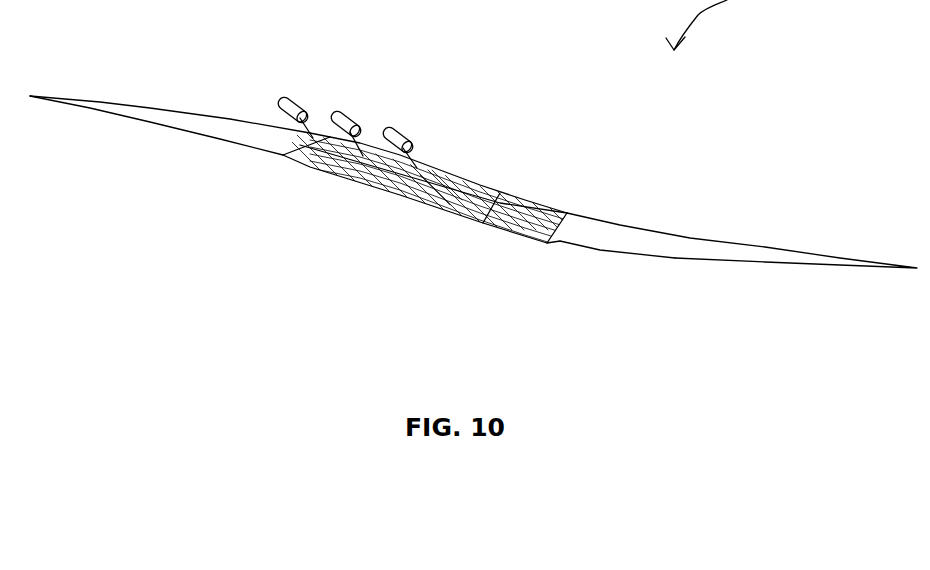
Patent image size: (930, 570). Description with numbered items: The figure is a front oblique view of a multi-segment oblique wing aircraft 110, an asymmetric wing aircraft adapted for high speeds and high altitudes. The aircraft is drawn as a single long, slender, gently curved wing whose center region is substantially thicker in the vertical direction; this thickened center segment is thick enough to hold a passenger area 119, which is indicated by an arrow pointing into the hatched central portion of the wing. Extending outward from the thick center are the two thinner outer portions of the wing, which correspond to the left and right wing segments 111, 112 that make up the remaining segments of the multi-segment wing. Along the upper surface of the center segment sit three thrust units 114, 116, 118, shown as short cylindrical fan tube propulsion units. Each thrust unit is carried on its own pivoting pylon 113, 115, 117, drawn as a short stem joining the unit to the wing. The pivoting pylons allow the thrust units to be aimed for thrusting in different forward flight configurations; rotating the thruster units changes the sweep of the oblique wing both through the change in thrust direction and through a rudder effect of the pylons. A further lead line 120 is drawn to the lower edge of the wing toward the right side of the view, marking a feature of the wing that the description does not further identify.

The multi-segment oblique wing aircraft 110 is at (480, 183).
The blade tip portion 111 is at (765, 247).
The blade root portion 112 is at (180, 110).
The pivoting pylon 113 is at (312, 130).
The thrust unit 114 is at (290, 97).
The pivoting pylon 115 is at (360, 140).
The thrust unit 116 is at (337, 122).
The pivoting pylon 117 is at (423, 160).
The thrust unit 118 is at (388, 137).
The passenger area 119 is at (430, 180).
The lower edge 120 is at (675, 258).